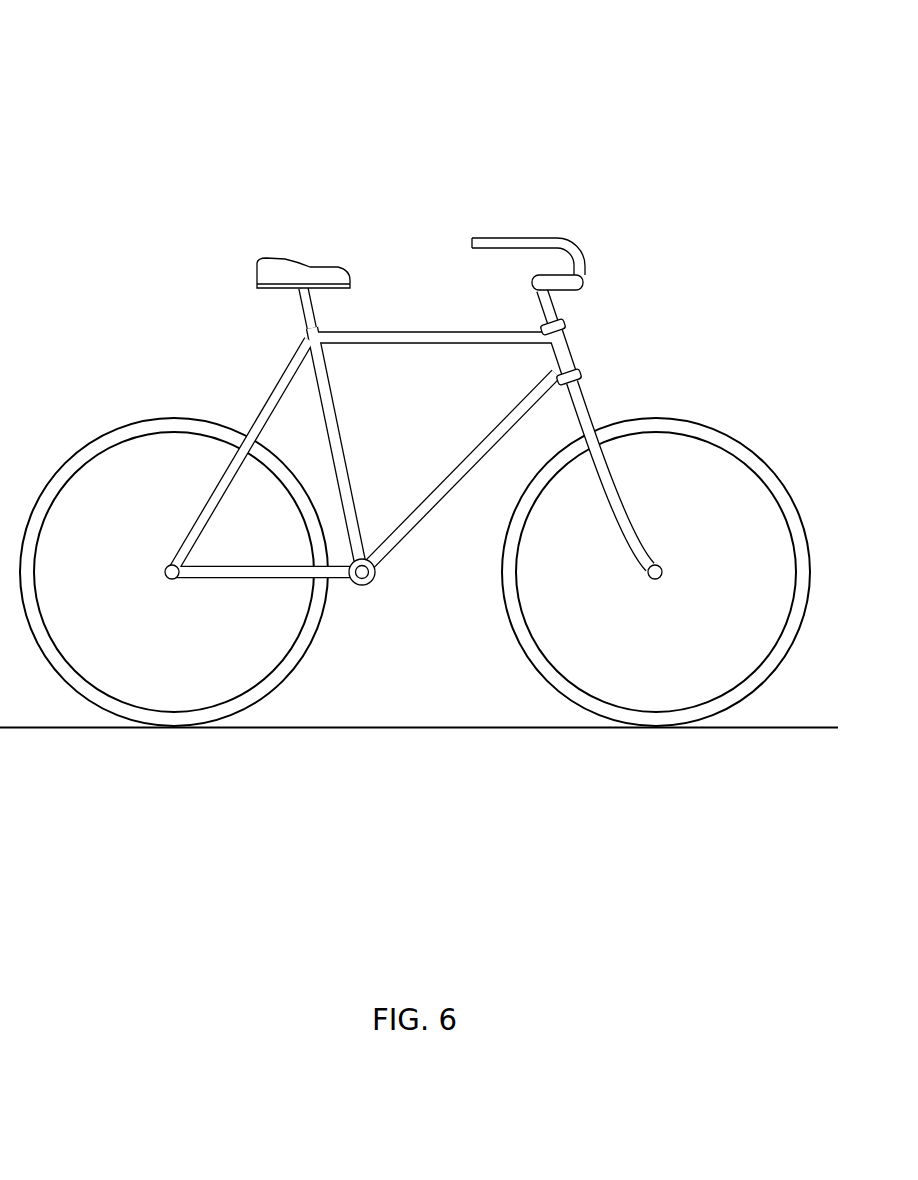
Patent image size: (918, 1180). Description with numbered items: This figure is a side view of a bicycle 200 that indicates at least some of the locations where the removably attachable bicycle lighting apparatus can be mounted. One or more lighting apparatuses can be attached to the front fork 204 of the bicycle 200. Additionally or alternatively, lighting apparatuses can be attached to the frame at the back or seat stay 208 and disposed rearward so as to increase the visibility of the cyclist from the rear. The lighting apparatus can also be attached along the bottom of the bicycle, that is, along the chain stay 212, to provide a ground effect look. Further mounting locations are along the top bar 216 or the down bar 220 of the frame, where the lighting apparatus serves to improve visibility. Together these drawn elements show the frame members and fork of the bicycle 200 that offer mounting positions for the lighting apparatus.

The bicycle 200 is at (225, 74).
The front fork 204 is at (603, 459).
The seat stay 208 is at (264, 409).
The chain stay 212 is at (259, 578).
The top bar 216 is at (407, 333).
The down bar 220 is at (406, 538).